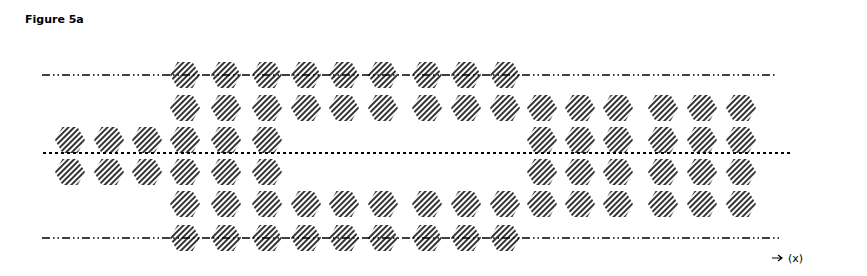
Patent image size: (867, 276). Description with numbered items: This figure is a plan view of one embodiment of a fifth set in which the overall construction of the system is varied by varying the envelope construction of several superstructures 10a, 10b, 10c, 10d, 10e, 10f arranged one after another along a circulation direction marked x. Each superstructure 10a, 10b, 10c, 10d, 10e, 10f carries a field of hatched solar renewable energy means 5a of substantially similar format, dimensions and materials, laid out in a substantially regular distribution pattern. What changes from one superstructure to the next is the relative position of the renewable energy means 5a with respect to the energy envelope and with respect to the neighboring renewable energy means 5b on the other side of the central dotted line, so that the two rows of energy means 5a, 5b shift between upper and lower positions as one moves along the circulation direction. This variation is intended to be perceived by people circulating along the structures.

The renewable energy means 5a is at (401, 112).
The neighboring renewable energy means 5b is at (404, 201).
The superstructure 10a is at (108, 115).
The superstructure 10b is at (226, 148).
The superstructure 10c is at (344, 148).
The superstructure 10d is at (466, 148).
The superstructure 10e is at (580, 131).
The superstructure 10f is at (702, 131).